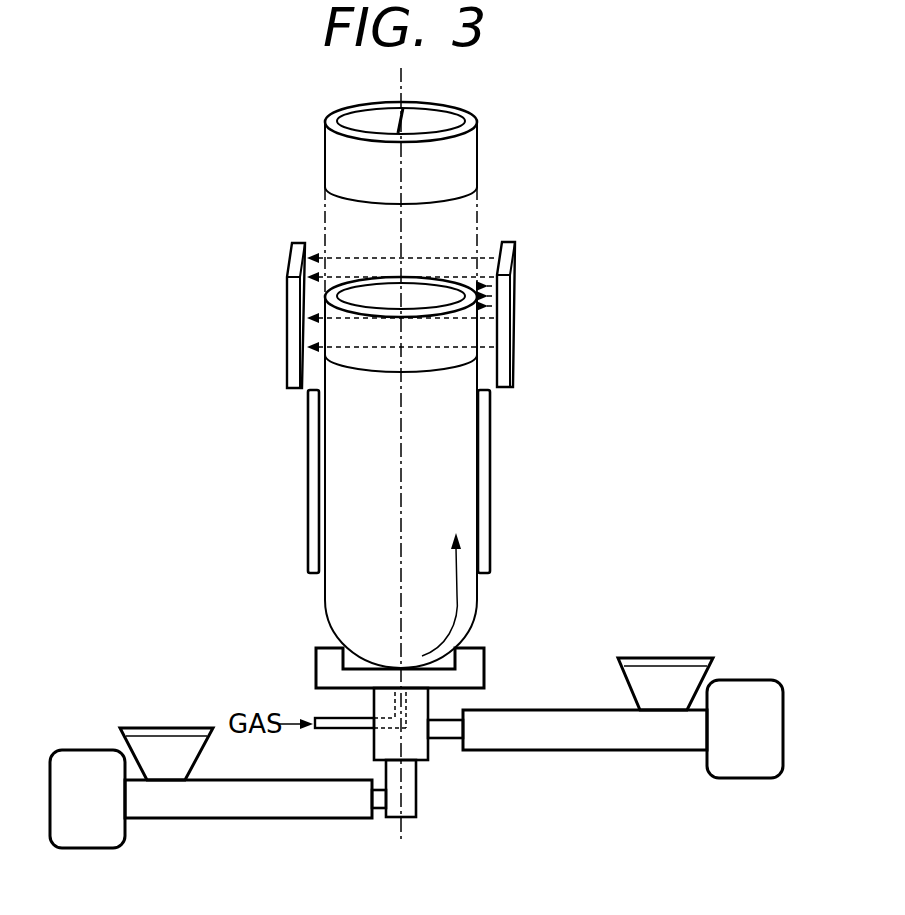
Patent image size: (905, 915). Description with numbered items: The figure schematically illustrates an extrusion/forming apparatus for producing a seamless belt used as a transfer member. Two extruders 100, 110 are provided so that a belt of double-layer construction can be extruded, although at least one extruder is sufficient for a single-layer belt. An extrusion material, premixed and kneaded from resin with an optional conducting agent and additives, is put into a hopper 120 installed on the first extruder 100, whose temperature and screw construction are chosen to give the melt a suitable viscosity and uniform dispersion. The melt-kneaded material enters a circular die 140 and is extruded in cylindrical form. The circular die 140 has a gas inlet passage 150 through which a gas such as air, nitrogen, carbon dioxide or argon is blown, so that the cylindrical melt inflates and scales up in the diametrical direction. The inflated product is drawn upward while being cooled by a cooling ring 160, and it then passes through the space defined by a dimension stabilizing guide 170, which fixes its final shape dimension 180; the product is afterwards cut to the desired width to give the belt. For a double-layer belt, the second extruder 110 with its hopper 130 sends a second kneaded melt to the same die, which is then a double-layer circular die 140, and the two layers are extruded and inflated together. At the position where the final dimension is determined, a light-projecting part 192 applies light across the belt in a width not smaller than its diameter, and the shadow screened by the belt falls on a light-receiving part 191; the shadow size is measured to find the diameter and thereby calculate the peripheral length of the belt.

The extruder 100 is at (277, 805).
The extruder 110 is at (612, 738).
The hopper 120 is at (163, 745).
The hopper 130 is at (668, 680).
The circular die 140 is at (418, 746).
The gas inlet passage 150 is at (333, 715).
The cooling ring 160 is at (327, 655).
The dimension stabilizing guide 170 is at (313, 474).
The final shape dimension 180 is at (408, 122).
The light-receiving part 191 is at (293, 323).
The light-projecting part 192 is at (503, 323).